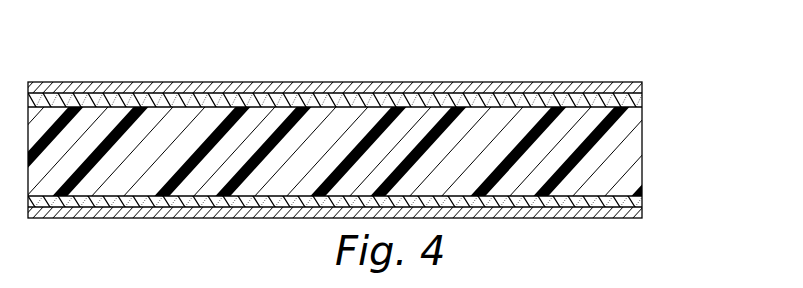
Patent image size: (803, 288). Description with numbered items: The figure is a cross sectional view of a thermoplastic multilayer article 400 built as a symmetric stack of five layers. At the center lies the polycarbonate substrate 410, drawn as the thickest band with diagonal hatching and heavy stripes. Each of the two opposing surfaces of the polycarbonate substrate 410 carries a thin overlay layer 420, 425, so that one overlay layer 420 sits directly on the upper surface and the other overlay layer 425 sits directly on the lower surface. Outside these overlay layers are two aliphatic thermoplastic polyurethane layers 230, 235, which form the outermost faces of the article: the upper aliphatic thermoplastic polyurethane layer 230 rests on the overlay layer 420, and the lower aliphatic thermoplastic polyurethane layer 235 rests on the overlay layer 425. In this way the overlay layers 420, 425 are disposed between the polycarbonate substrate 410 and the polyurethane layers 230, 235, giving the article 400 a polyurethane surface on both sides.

The article 400 is at (106, 68).
The aliphatic thermoplastic polyurethane layer 230 is at (372, 92).
The overlay layer 420 is at (547, 100).
The polycarbonate substrate 410 is at (562, 145).
The overlay layer 425 is at (163, 207).
The aliphatic thermoplastic polyurethane layer 235 is at (272, 215).